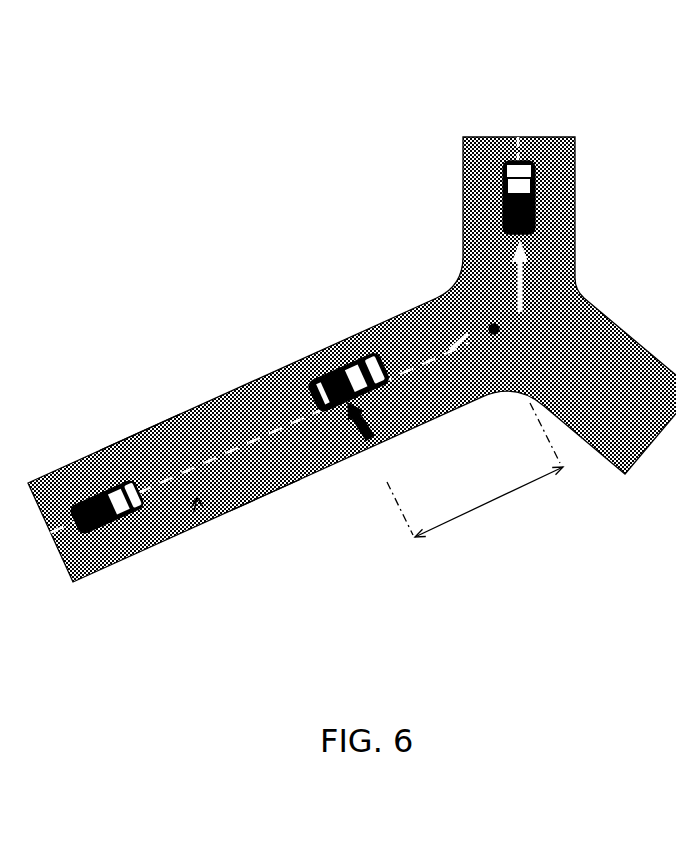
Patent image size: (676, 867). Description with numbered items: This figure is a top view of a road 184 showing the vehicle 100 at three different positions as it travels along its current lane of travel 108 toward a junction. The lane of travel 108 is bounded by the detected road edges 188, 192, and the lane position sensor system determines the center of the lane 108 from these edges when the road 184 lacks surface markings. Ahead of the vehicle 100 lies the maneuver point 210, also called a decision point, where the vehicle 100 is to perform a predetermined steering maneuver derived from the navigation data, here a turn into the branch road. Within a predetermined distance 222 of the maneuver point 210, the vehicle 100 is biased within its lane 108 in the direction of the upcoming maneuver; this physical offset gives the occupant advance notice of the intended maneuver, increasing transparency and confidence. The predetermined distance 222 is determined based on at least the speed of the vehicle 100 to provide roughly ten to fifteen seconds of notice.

The vehicle 100 is at (85, 493).
The current lane of travel 108 is at (242, 422).
The road edge 192 is at (140, 430).
The road edge 188 is at (263, 497).
The road 184 is at (197, 510).
The maneuver point 210 is at (518, 372).
The predetermined distance 222 is at (490, 503).